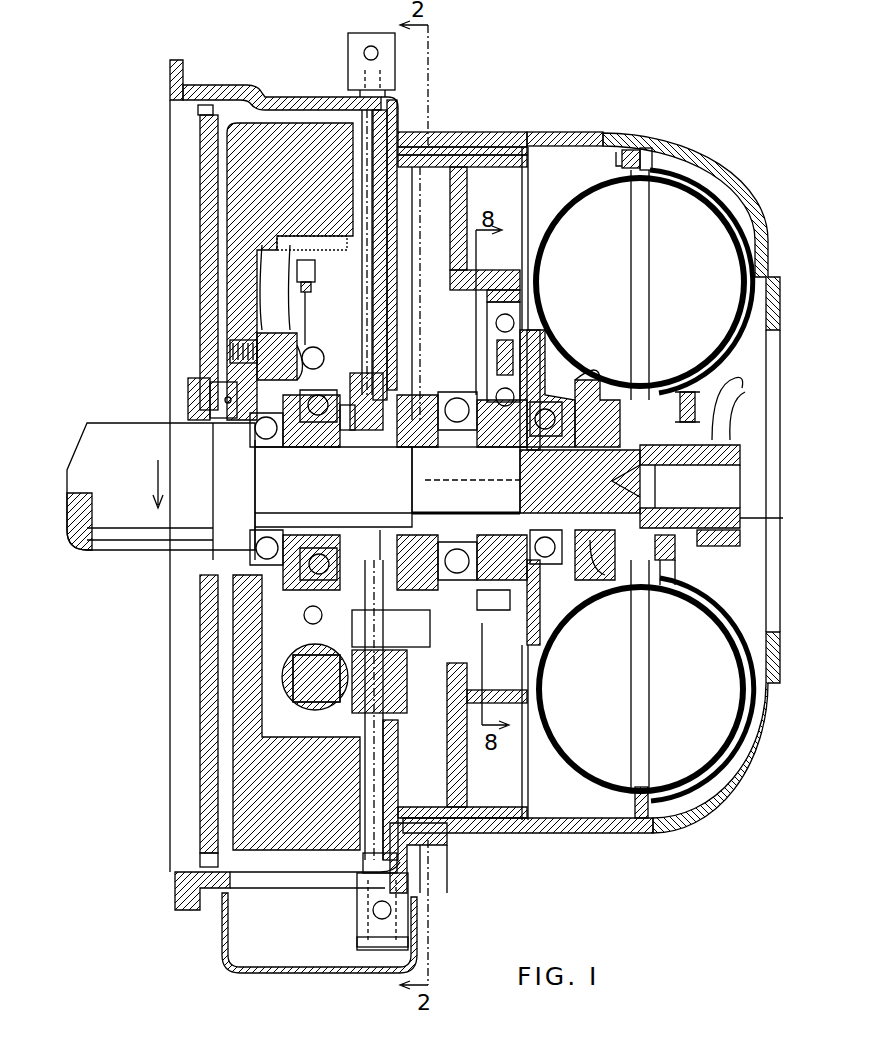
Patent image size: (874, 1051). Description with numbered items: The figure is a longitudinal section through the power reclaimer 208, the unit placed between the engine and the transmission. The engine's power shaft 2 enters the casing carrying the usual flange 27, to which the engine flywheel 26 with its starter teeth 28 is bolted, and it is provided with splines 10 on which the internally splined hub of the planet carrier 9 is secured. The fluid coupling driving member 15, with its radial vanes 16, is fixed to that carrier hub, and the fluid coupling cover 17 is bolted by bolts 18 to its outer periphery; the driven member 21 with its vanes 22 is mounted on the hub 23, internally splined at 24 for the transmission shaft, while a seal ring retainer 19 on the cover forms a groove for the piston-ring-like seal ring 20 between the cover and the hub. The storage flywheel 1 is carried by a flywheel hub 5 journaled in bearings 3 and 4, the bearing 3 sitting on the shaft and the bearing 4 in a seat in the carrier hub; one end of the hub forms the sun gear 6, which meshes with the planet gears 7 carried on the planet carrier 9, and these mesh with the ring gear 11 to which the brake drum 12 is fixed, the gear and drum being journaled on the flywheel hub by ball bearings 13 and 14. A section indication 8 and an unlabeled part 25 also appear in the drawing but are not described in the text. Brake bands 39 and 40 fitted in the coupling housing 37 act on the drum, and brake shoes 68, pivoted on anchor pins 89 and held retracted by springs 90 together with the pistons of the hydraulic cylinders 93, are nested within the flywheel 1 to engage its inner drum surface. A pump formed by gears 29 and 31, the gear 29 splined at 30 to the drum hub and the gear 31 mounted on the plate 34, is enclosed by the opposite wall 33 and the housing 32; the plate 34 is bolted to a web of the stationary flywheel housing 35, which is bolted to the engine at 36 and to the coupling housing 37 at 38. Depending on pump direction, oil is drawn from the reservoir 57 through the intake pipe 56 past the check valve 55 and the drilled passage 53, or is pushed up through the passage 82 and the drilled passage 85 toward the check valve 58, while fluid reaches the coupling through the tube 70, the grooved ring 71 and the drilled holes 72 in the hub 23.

The flywheel 1 is at (283, 123).
The power shaft 2 is at (320, 491).
The bearing 3 is at (265, 447).
The bearing 4 is at (582, 395).
The flywheel hub 5 is at (266, 343).
The spur gear (sun gear) 6 is at (485, 560).
The planet gears 7 is at (522, 298).
The bearing 8 is at (515, 323).
The planet carrier 9 is at (545, 360).
The splines 10 is at (590, 535).
The ring gear 11 is at (486, 270).
The brake drum 12 is at (475, 167).
The ball bearing 13 is at (303, 613).
The ball bearing 14 is at (485, 570).
The fluid coupling driving member 15 is at (553, 212).
The vanes 16 is at (608, 286).
The fluid coupling cover 17 is at (715, 205).
The bolts 18 is at (652, 154).
The seal ring retainer 19 is at (668, 585).
The seal ring 20 is at (690, 560).
The fluid coupling driven member 21 is at (722, 218).
The vanes 22 is at (697, 291).
The hub 23 is at (773, 522).
The internal splines 24 is at (685, 508).
The sleeve 25 is at (655, 472).
The engine flywheel 26 is at (200, 303).
The flange 27 is at (195, 378).
The teeth 28 is at (198, 108).
The pump gear 29 is at (385, 535).
The splines 30 is at (380, 430).
The pump gear 31 is at (407, 665).
The pump housing 32 is at (358, 388).
The pump wall 33 is at (352, 365).
The plate 34 is at (380, 318).
The flywheel housing 35 is at (215, 85).
The bolted joint to engine 36 is at (170, 64).
The coupling housing 37 is at (558, 132).
The bolted joint 38 is at (393, 100).
The brake band 39 is at (486, 132).
The brake band 40 is at (430, 138).
The drilled passage 53 is at (398, 754).
The check valve 55 is at (357, 910).
The intake pipe 56 is at (357, 955).
The reservoir 57 is at (222, 935).
The check valve 58 is at (348, 50).
The brake shoes 68 is at (278, 270).
The supply line (tube) 70 is at (371, 46).
The grooved ring 71 is at (710, 546).
The drilled holes 72 is at (697, 450).
The passage 82 is at (412, 325).
The drilled passage 85 is at (373, 212).
The anchor pins 89 is at (320, 302).
The springs 90 is at (319, 343).
The hydraulic cylinders 93 is at (283, 667).
The power reclaimer 208 is at (611, 123).